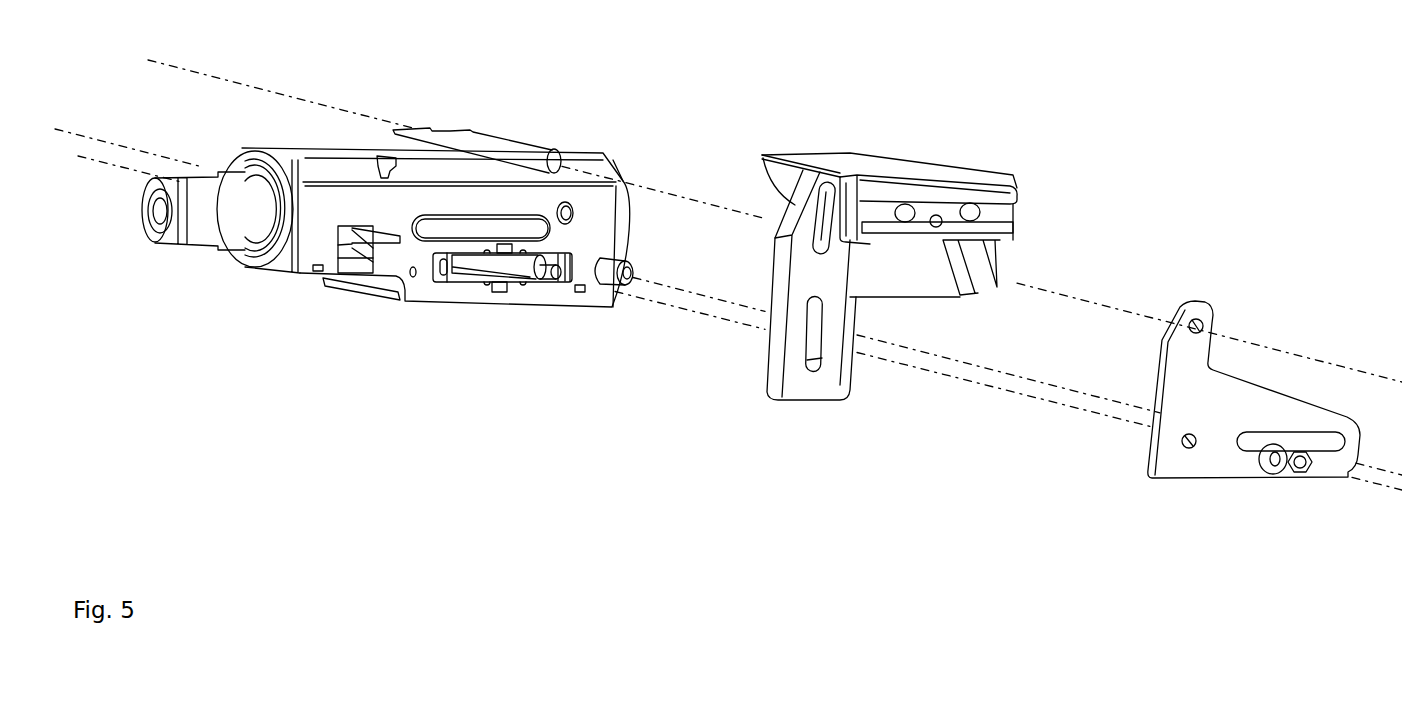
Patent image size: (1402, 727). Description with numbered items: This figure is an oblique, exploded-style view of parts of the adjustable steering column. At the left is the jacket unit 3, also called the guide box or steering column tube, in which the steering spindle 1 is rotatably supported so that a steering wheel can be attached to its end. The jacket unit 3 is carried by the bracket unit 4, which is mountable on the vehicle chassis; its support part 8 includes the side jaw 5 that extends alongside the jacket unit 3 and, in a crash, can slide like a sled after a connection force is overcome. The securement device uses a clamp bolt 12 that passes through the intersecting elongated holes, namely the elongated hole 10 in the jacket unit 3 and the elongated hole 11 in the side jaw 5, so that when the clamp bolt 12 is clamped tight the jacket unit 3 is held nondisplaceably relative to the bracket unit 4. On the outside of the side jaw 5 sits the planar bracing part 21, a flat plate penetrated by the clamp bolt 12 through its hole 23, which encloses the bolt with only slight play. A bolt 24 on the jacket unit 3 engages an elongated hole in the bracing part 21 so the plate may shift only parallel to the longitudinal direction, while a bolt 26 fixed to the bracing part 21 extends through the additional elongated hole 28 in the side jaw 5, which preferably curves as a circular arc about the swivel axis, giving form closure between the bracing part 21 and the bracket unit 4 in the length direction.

The steering spindle 1 is at (208, 235).
The jacket unit 3 is at (318, 303).
The bracket unit 4 is at (929, 336).
The side jaw 5 is at (793, 353).
The support part 8 is at (878, 162).
The elongated hole 10 is at (457, 277).
The elongated hole 11 is at (815, 365).
The clamp bolt 12 is at (513, 271).
The bracing part 21 is at (1205, 403).
The hole 23 is at (1186, 448).
The bolt 24 is at (612, 287).
The bolt 26 is at (517, 145).
The elongated hole 28 is at (818, 173).